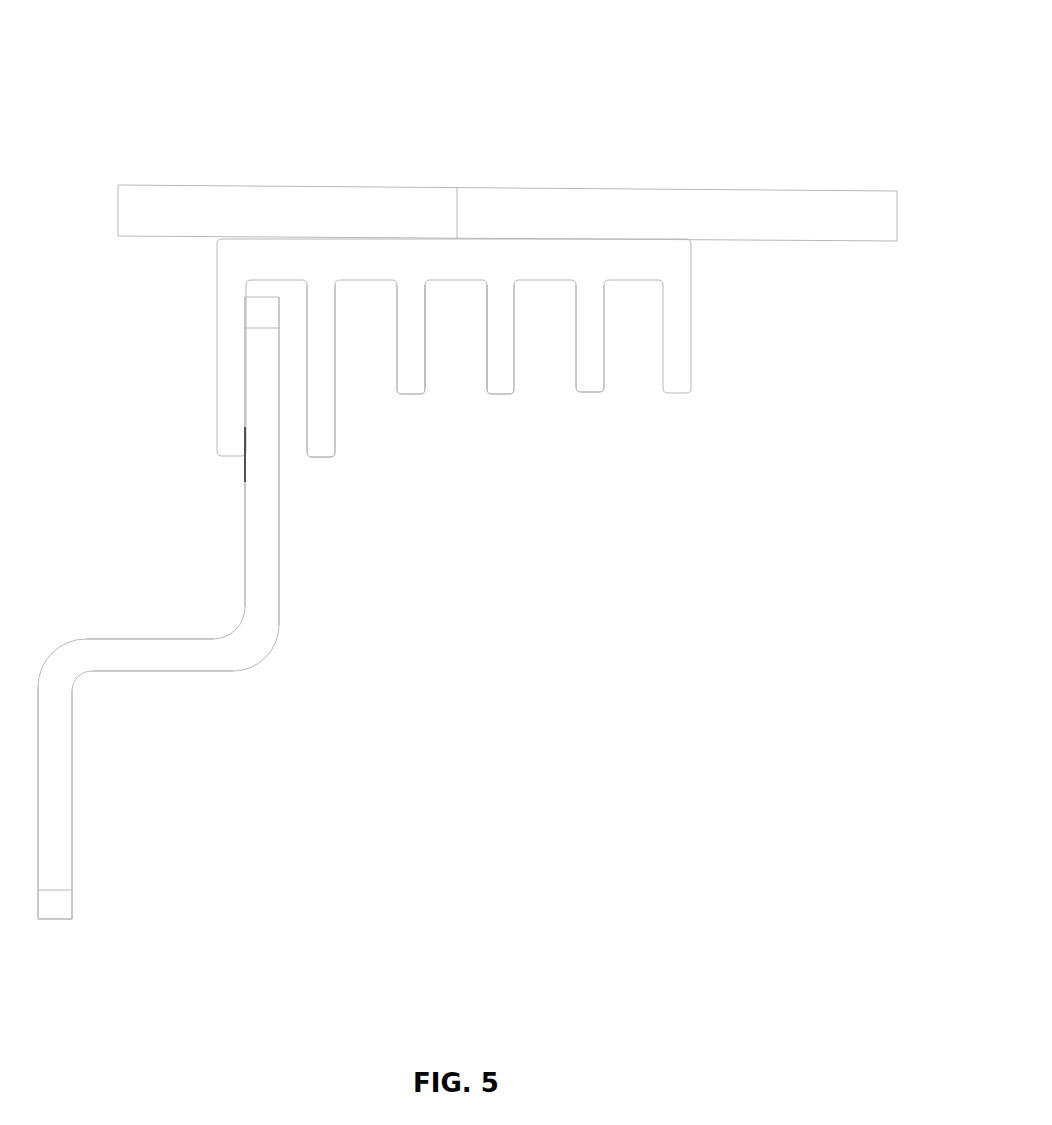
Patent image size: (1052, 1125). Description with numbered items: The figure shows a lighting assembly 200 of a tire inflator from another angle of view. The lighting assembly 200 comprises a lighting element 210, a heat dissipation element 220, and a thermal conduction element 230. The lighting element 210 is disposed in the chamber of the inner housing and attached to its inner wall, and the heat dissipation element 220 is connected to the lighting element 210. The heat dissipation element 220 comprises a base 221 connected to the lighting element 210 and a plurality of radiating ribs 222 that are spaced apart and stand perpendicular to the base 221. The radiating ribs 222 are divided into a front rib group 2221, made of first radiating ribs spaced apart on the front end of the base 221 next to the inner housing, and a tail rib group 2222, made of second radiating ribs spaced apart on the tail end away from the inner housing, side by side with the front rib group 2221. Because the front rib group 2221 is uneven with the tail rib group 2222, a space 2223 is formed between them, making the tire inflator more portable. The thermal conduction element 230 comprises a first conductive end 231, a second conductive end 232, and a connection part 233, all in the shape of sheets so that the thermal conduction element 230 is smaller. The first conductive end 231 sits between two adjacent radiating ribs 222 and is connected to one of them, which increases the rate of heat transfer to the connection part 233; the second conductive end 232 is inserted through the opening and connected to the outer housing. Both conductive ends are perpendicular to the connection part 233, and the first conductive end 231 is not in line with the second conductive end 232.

The lighting assembly 200 is at (197, 100).
The lighting element 210 is at (343, 218).
The heat dissipation element 220 is at (514, 360).
The base 221 is at (603, 257).
The radiating rib 222 is at (635, 505).
The front rib group 2221 is at (318, 414).
The tail rib group 2222 is at (588, 364).
The space 2223 is at (480, 400).
The thermal conduction element 230 is at (240, 608).
The first conductive end 231 is at (257, 498).
The second conductive end 232 is at (138, 803).
The connection part 233 is at (185, 654).